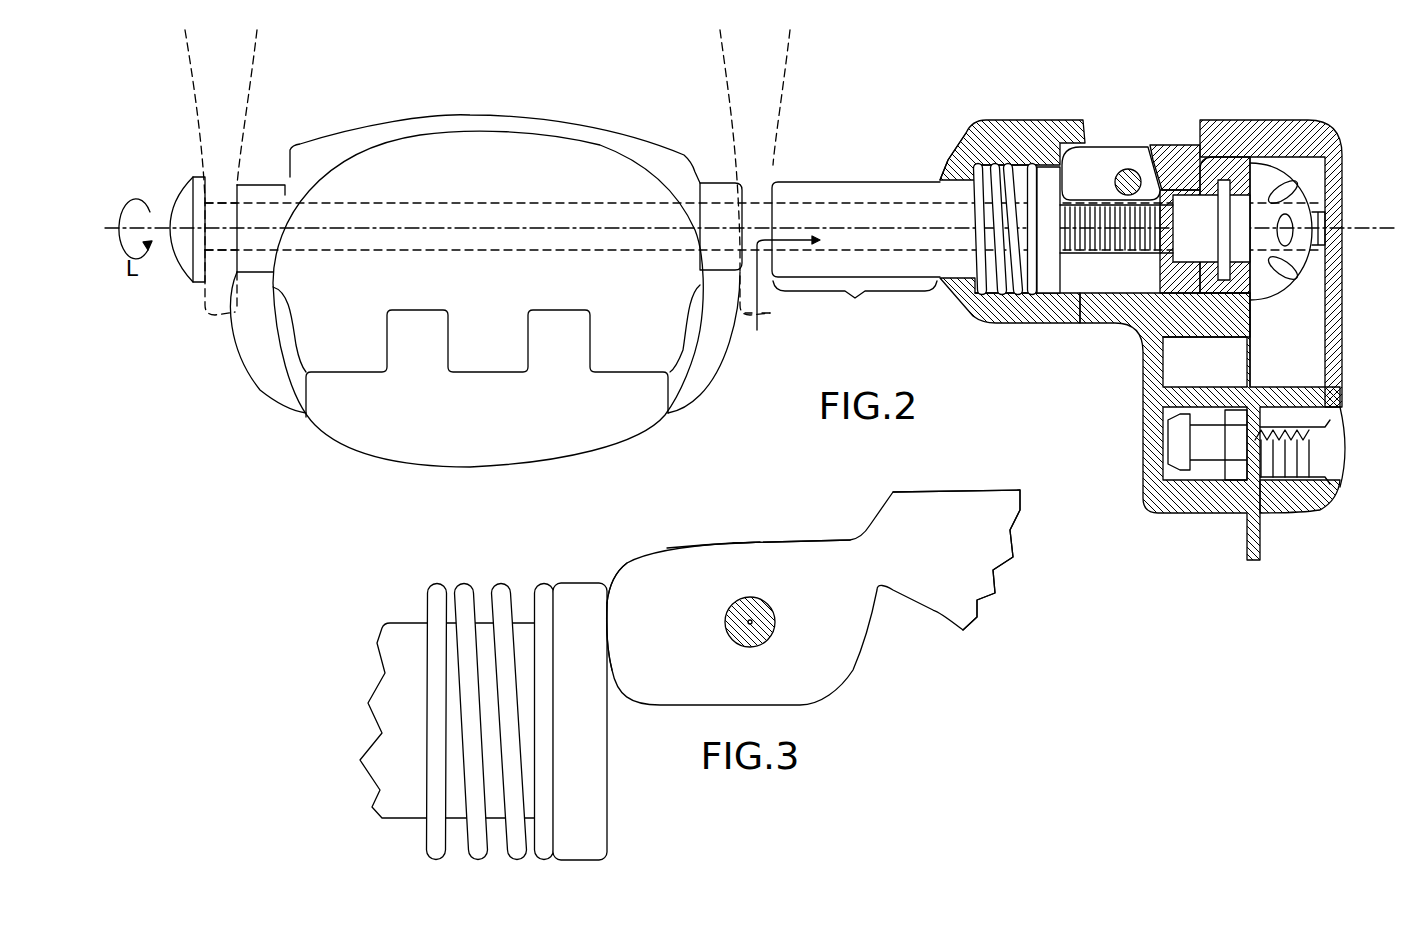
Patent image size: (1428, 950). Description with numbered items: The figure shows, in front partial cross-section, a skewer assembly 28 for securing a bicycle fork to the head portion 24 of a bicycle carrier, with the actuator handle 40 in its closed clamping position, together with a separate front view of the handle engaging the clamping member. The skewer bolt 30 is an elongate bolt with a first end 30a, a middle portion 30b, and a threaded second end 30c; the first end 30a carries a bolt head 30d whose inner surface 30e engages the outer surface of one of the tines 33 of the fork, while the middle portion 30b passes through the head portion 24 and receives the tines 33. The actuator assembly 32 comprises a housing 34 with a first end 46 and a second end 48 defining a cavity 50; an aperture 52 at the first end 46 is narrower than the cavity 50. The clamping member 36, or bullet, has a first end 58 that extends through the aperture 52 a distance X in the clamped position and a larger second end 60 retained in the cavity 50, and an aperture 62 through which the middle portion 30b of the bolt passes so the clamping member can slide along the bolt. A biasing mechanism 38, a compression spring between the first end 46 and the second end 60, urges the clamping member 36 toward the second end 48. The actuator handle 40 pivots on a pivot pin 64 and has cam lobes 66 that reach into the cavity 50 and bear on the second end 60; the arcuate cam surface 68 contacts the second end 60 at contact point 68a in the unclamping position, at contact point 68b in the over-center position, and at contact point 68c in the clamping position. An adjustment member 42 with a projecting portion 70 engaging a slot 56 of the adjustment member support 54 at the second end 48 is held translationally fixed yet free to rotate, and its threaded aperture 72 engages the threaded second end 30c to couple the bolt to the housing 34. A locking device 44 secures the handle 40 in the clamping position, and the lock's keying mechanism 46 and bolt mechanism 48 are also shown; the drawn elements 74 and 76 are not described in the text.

In FIG. 2, the head portion 24 is at (400, 463).
In FIG. 2, the skewer assembly 28 is at (891, 109).
In FIG. 2, the skewer bolt 30 is at (178, 277).
In FIG. 2, the first end 30a is at (170, 210).
In FIG. 2, the middle portion 30b is at (540, 253).
In FIG. 2, the second end 30c is at (1336, 217).
In FIG. 2, the bolt head 30d is at (197, 177).
In FIG. 2, the inner surface 30e is at (207, 190).
In FIG. 2, the actuator assembly 32 is at (1067, 376).
In FIG. 2, the tines 33 is at (240, 163).
In FIG. 2, the housing 34 is at (1020, 119).
In FIG. 2, the clamping member 36 is at (857, 182).
In FIG. 3, the clamping member 36 is at (408, 622).
In FIG. 2, the biasing mechanism 38 is at (993, 318).
In FIG. 3, the biasing mechanism 38 is at (505, 593).
In FIG. 2, the actuator handle 40 is at (1220, 120).
In FIG. 3, the actuator handle 40 is at (960, 490).
In FIG. 2, the adjustment member 42 is at (1305, 292).
In FIG. 2, the locking device 44 is at (1356, 413).
In FIG. 2, the first end 46 is at (945, 163).
In FIG. 2, the second end 48 is at (1250, 320).
In FIG. 2, the cavity 50 is at (1160, 280).
In FIG. 2, the aperture 52 is at (960, 193).
In FIG. 2, the adjustment member support 54 is at (1252, 307).
In FIG. 2, the slot 56 is at (1257, 165).
In FIG. 2, the first end 58 is at (766, 178).
In FIG. 2, the second end 60 is at (1055, 320).
In FIG. 3, the second end 60 is at (607, 812).
In FIG. 2, the aperture 62 is at (781, 298).
In FIG. 2, the pivot pin 64 is at (1134, 170).
In FIG. 3, the pivot pin 64 is at (757, 633).
In FIG. 2, the cam lobes 66 is at (1107, 147).
In FIG. 3, the cam lobes 66 is at (865, 650).
In FIG. 3, the cam surface 68 is at (750, 545).
In FIG. 3, the contact point 68a is at (783, 539).
In FIG. 3, the contact point 68b is at (624, 575).
In FIG. 3, the contact point 68c is at (610, 606).
In FIG. 2, the projecting portion 70 is at (1224, 282).
In FIG. 2, the threaded aperture 72 is at (1190, 237).
In FIG. 2, the screw 74 is at (1355, 472).
In FIG. 2, the screw head 76 is at (1163, 443).